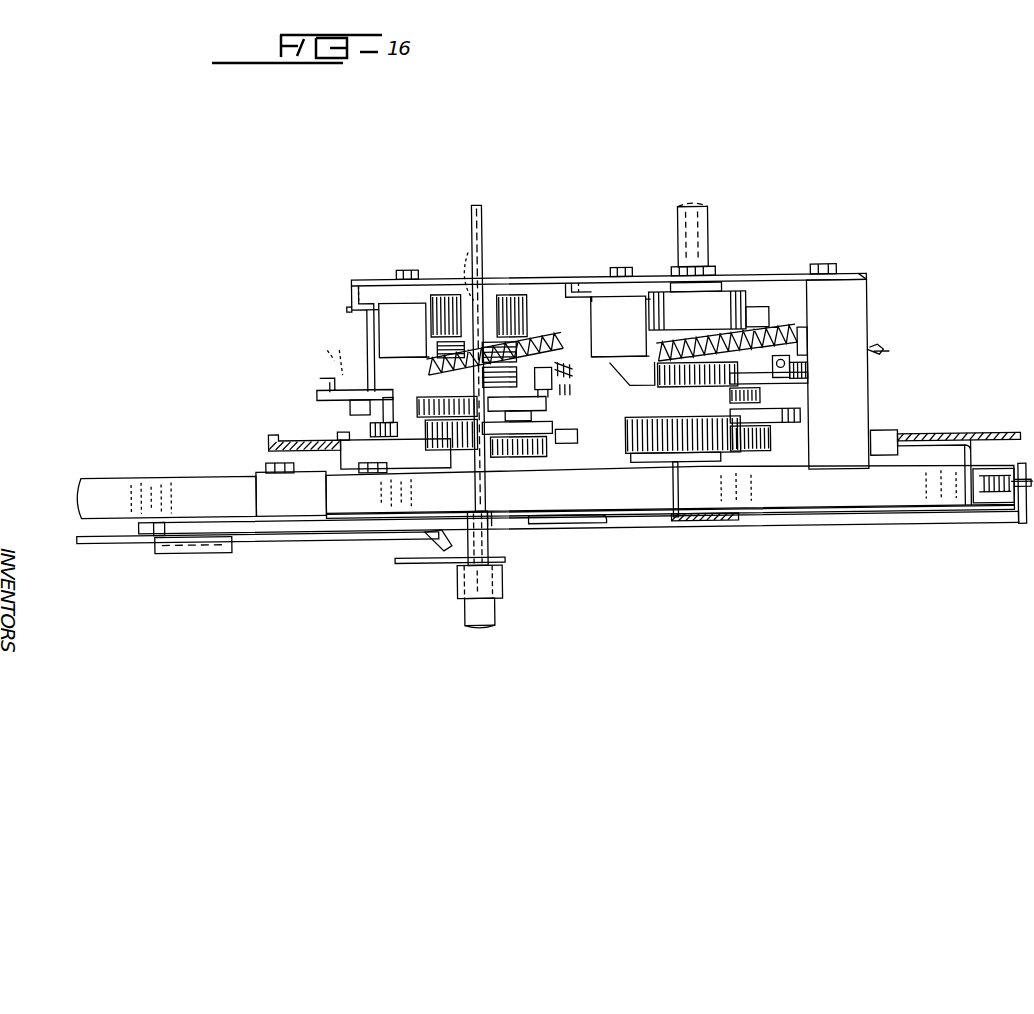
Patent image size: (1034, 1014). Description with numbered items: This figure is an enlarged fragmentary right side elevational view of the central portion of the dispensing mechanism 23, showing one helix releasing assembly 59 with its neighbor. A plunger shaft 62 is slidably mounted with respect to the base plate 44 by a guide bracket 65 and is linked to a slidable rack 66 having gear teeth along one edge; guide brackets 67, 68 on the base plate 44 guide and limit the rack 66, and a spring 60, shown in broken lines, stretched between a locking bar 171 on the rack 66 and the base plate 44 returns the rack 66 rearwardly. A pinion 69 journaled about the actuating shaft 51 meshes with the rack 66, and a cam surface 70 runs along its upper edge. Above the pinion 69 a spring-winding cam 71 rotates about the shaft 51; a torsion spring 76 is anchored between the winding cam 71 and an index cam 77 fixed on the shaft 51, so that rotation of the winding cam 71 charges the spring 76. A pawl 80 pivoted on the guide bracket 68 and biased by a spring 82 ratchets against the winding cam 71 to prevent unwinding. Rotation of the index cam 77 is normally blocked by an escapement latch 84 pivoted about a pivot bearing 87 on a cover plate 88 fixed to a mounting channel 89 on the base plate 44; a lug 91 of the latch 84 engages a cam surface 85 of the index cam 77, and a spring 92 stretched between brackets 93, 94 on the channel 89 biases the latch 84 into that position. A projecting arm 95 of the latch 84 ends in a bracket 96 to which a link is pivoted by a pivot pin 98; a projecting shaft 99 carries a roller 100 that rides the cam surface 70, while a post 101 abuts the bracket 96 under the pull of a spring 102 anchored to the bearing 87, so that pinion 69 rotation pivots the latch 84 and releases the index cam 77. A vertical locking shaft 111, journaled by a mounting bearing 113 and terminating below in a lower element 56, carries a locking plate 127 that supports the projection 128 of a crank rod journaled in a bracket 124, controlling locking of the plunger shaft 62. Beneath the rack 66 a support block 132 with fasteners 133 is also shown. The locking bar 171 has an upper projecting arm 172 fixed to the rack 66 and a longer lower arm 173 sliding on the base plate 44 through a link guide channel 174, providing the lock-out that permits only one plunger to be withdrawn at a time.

The dispensing mechanism 23 is at (924, 371).
The base plate 44 is at (1000, 522).
The actuating shaft 51 is at (710, 243).
The coupling sleeve 56 is at (500, 582).
The helix releasing assembly 59 is at (875, 286).
The spring 60 is at (1015, 455).
The plunger shaft 62 is at (96, 471).
The guide bracket 65 is at (668, 466).
The rack 66 is at (278, 434).
The guide bracket 67 is at (318, 470).
The guide bracket 68 is at (890, 441).
The pinion 69 is at (537, 458).
The cam surface 70 is at (562, 414).
The spring-winding cam 71 is at (420, 406).
The torsion spring 76 is at (759, 302).
The index cam 77 is at (668, 288).
The pawl 80 is at (808, 382).
The spring 82 is at (808, 370).
The escapement latch 84 is at (583, 292).
The cam surface 85 is at (762, 321).
The pivot bearing 87 is at (634, 266).
The cover plate 88 is at (749, 277).
The mounting channel 89 is at (868, 315).
The lug 91 is at (600, 294).
The spring 92 is at (800, 320).
The bracket 93 is at (514, 328).
The bracket 94 is at (808, 337).
The projecting arm 95 is at (572, 292).
The bracket 96 is at (634, 375).
The pivot pin 98 is at (552, 398).
The projecting shaft 99 is at (582, 423).
The roller 100 is at (570, 443).
The post 101 is at (472, 483).
The spring 102 is at (368, 325).
The locking shaft 111 is at (484, 230).
The mounting bearing 113 is at (486, 553).
The journaling bracket 124 is at (172, 547).
The locking plate 127 is at (393, 558).
The projection 128 is at (432, 550).
The support block 132 is at (262, 474).
The mounting screws 133 is at (373, 469).
The locking bar 171 is at (968, 462).
The upper projecting arm 172 is at (945, 444).
The lower arm 173 is at (896, 527).
The link guide channel 174 is at (600, 527).